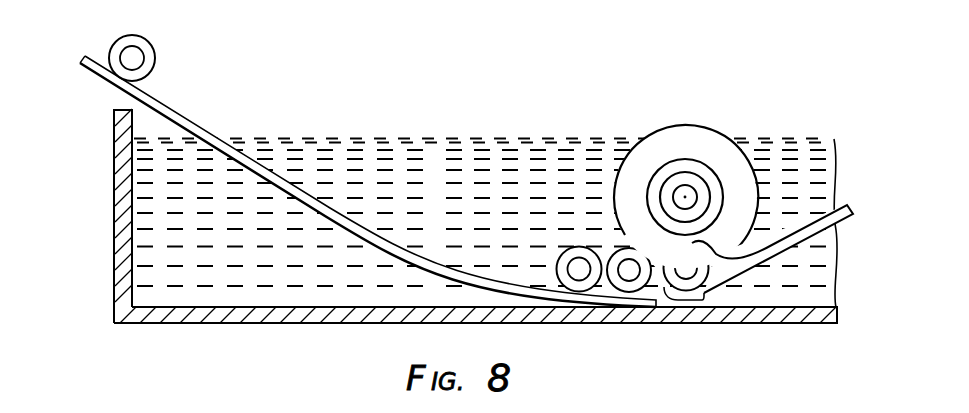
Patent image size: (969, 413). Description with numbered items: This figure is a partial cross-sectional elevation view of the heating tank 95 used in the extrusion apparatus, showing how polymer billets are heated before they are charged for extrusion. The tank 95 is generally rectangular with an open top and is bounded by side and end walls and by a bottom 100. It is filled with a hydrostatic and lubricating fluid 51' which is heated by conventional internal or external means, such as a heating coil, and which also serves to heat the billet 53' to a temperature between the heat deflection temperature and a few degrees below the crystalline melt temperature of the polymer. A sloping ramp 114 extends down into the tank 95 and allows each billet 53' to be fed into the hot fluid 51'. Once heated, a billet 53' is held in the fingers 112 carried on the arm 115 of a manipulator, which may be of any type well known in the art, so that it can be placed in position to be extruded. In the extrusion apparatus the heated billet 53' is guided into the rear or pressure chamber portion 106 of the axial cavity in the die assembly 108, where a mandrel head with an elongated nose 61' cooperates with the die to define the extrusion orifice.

The hydrostatic and lubricating fluid 51' is at (485, 223).
The billet 53' is at (427, 161).
The elongated nose 61' is at (702, 177).
The tank 95 is at (114, 149).
The bottom 100 is at (295, 324).
The rear or pressure chamber portion 106 is at (683, 168).
The die assembly 108 is at (672, 114).
The fingers 112 is at (703, 301).
The sloping ramp 114 is at (199, 127).
The arm 115 is at (815, 238).